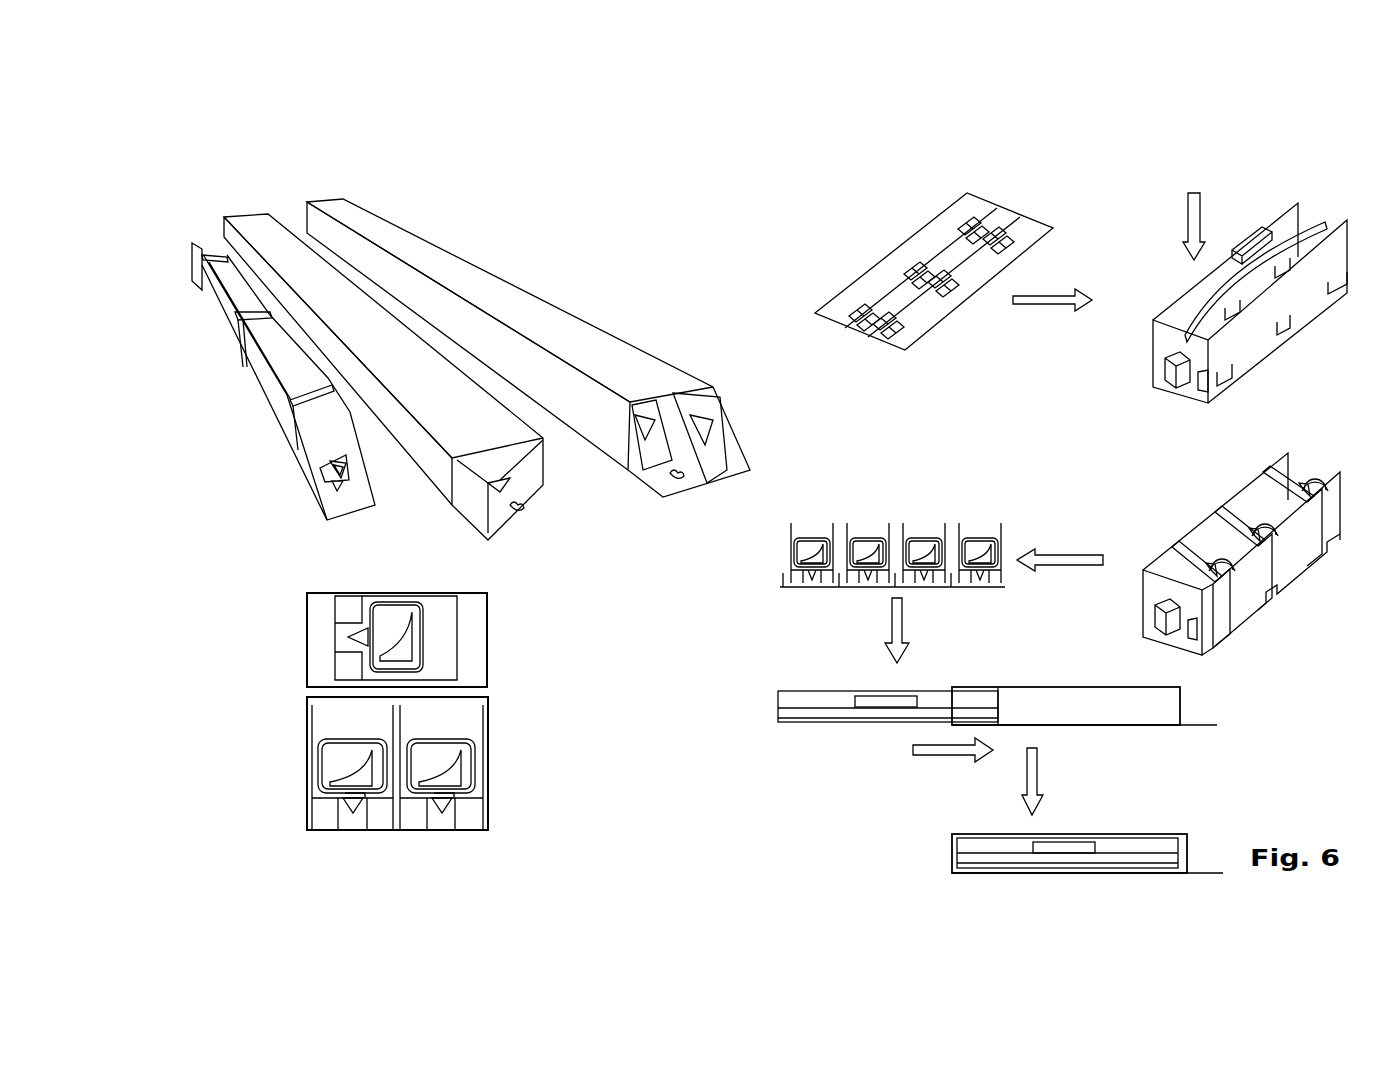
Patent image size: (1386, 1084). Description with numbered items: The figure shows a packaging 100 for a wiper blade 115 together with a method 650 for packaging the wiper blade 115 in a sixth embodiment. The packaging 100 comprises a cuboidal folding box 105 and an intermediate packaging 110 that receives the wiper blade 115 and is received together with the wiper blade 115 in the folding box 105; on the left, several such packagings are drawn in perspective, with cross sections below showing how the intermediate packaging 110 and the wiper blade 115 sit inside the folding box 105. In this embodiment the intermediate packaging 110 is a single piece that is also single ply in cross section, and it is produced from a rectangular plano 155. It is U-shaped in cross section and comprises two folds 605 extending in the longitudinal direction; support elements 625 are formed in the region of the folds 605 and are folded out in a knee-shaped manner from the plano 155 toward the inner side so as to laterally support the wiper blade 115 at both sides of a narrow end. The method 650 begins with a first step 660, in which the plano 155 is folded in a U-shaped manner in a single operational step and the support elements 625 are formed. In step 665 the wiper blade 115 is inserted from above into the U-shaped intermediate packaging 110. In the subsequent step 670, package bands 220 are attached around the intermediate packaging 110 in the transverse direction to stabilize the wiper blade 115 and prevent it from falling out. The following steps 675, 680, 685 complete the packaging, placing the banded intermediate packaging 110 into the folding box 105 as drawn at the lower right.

The packaging 100 is at (203, 222).
The folding box 105 is at (578, 512).
The intermediate packaging 110 is at (307, 461).
The wiper blade 115 is at (327, 466).
The rectangular plano 155 is at (874, 252).
The package bands 220 is at (293, 387).
The folds 605 is at (1024, 203).
The support elements 625 is at (325, 806).
The method 650 is at (775, 178).
The first step 660 is at (1050, 309).
The step 665 is at (1186, 220).
The step 670 is at (1328, 450).
The step 675 is at (1068, 553).
The step 680 is at (890, 622).
The step 685 is at (1040, 773).